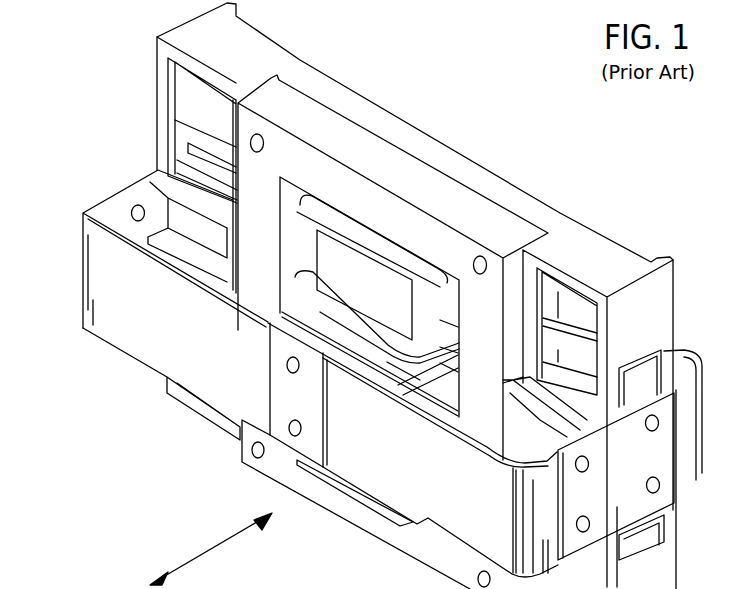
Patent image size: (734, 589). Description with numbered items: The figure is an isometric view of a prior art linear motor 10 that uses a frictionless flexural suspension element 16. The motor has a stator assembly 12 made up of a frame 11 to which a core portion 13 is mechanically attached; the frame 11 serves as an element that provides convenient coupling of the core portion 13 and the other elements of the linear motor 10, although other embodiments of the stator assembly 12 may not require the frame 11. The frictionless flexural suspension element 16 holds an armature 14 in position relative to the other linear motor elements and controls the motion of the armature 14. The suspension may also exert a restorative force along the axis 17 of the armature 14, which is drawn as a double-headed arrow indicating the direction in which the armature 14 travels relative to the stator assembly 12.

The linear motor 10 is at (667, 210).
The frame 11 is at (185, 43).
The stator assembly 12 is at (494, 135).
The core portion 13 is at (313, 123).
The armature 14 is at (265, 321).
The frictionless flexural suspension element 16 is at (143, 330).
The axis 17 is at (213, 545).